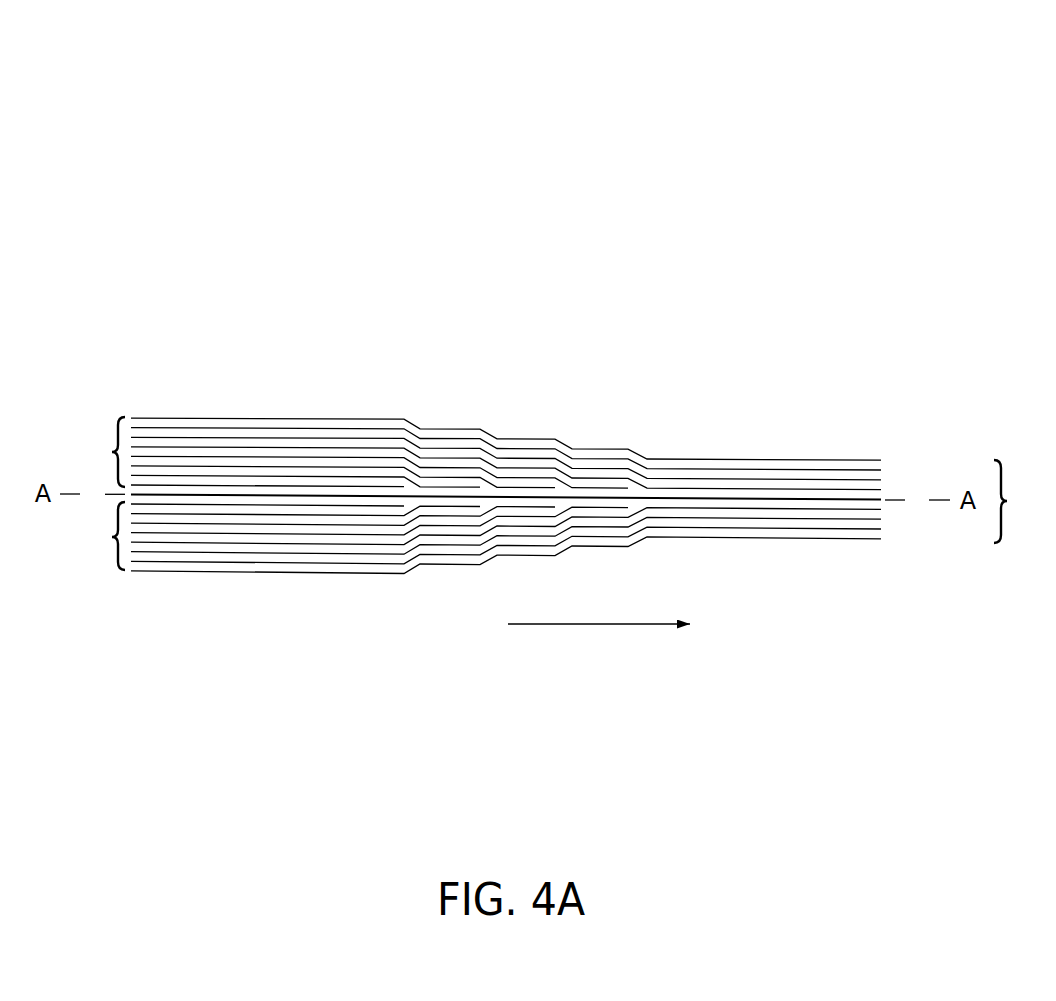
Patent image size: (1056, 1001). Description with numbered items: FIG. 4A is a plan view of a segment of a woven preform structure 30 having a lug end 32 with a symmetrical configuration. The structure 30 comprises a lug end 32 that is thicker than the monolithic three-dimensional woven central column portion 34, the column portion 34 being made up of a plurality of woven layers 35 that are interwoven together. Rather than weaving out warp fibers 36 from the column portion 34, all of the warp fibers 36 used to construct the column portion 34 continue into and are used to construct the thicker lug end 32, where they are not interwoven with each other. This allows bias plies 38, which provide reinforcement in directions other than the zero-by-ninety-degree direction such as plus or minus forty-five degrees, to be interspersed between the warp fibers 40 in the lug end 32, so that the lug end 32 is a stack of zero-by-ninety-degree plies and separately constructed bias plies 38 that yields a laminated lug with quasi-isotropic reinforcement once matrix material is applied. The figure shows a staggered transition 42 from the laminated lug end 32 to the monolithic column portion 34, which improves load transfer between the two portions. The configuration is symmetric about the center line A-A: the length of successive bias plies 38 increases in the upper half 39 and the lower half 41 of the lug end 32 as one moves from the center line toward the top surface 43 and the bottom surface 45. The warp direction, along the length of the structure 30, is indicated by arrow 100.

The structure 30 is at (547, 263).
The lug end 32 is at (241, 477).
The central column portion 34 is at (787, 501).
The warp fibers 36 is at (768, 518).
The bias plies 38 is at (186, 468).
The upper half 39 is at (473, 331).
The warp fibers 40 is at (233, 535).
The lower half 41 is at (473, 622).
The staggered transition 42 is at (525, 417).
The top surface 43 is at (309, 412).
The bottom surface 45 is at (297, 580).
The woven layers 35 is at (1025, 501).
The arrow indicating warp direction 100 is at (563, 611).